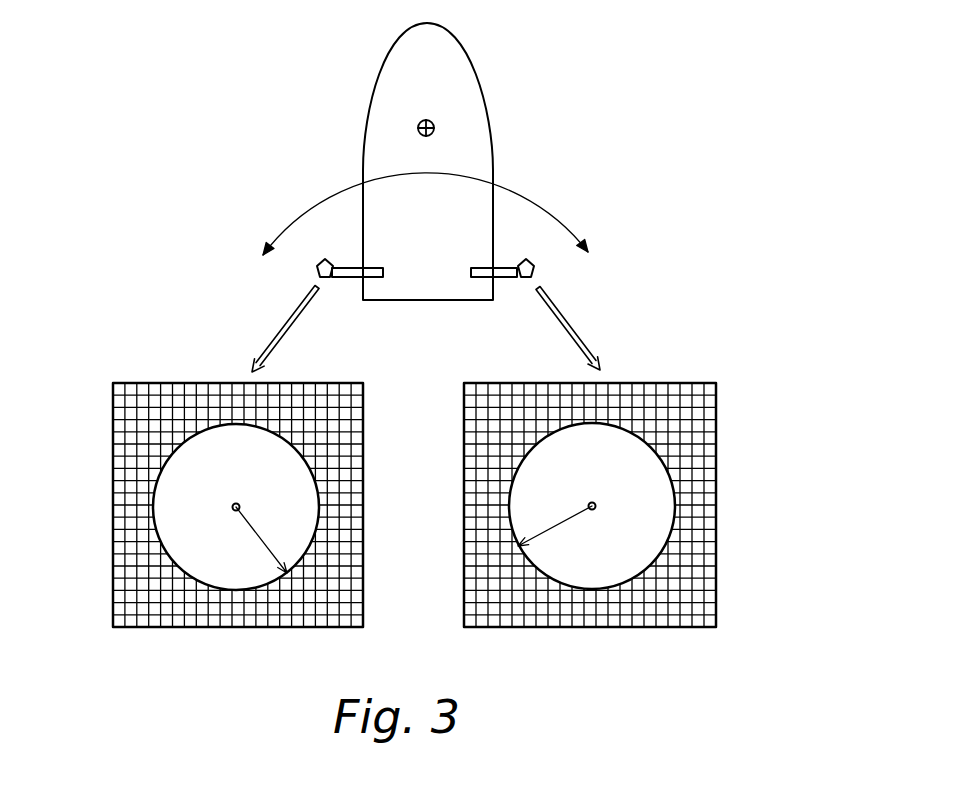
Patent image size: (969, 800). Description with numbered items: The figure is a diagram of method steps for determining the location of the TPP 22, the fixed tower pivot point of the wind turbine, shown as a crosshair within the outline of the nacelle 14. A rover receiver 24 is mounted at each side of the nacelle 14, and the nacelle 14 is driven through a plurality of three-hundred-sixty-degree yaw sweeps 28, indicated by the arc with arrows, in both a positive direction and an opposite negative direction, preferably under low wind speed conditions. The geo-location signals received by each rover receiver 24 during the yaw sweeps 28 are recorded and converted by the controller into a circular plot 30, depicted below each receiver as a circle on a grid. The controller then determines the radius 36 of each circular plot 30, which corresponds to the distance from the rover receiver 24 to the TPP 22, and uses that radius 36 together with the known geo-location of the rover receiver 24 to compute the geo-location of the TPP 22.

The nacelle 14 is at (493, 112).
The TPP 22 is at (418, 131).
The rover receiver 24 is at (317, 268).
The 360-degree yaw sweeps 28 is at (270, 236).
The circular plot 30 is at (113, 474).
The radius 36 is at (253, 532).